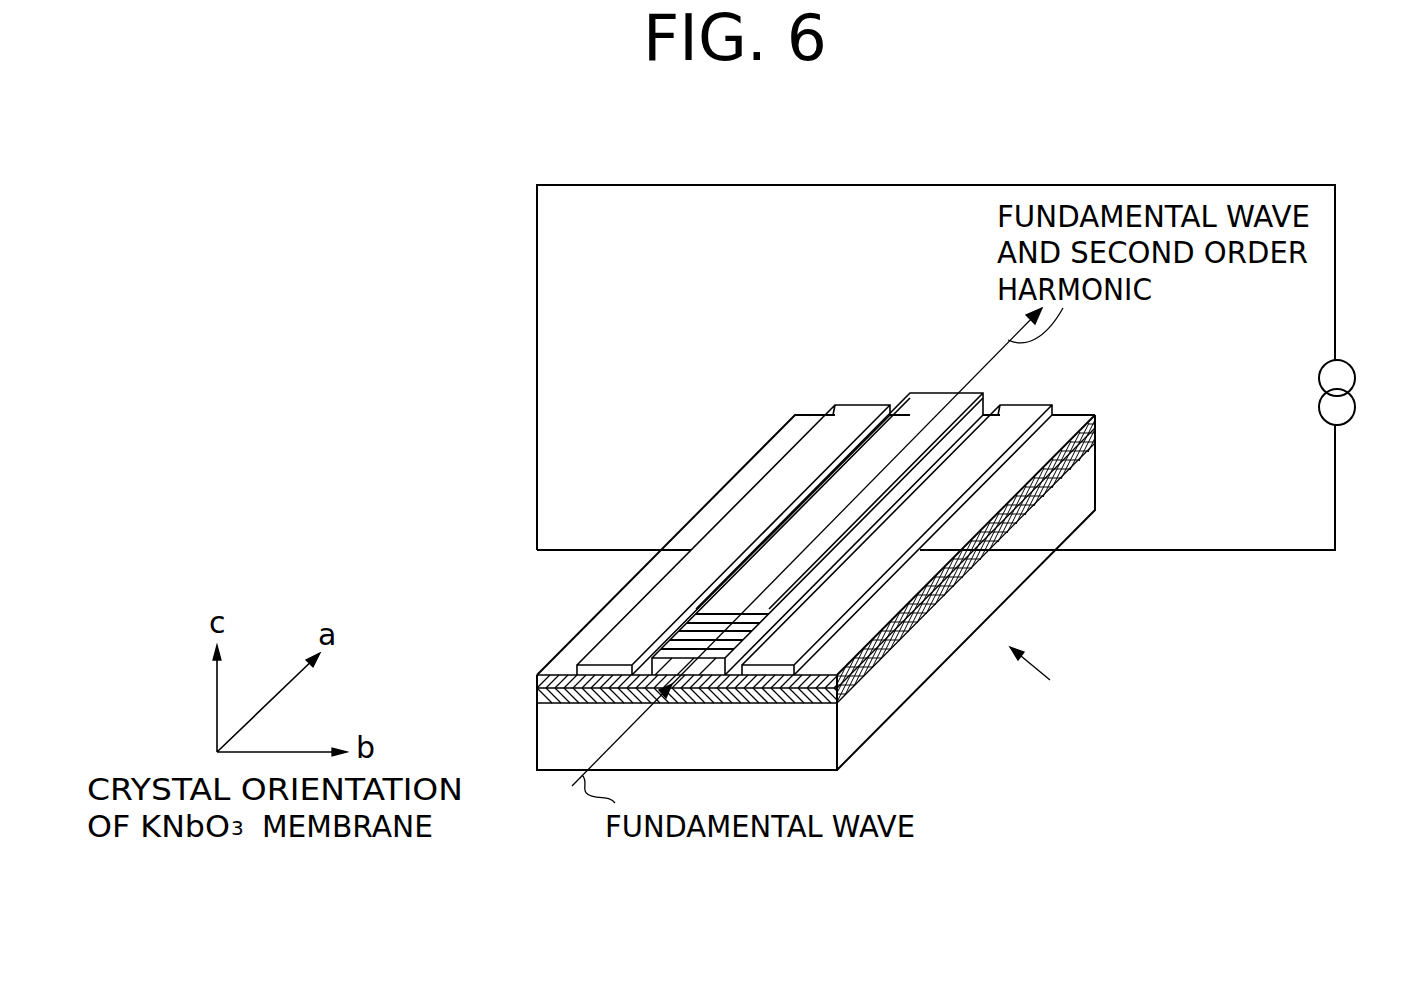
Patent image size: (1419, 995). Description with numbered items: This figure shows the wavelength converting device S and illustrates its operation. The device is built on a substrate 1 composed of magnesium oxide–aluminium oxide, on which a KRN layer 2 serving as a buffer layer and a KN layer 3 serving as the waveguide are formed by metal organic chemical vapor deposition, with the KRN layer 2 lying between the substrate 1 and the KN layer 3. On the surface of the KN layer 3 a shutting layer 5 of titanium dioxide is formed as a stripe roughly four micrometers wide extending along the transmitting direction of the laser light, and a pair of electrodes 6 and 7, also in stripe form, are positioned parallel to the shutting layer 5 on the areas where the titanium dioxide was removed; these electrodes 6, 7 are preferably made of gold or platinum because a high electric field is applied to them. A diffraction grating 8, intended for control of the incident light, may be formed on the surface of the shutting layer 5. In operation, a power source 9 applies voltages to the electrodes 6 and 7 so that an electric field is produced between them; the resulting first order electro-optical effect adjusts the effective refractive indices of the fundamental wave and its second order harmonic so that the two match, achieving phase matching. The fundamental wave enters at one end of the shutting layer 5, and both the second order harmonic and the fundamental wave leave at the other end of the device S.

The substrate 1 is at (535, 753).
The KRN layer 2 is at (537, 701).
The KN layer 3 is at (535, 678).
The shutting layer 5 is at (988, 393).
The electrode 6 is at (1047, 402).
The electrode 7 is at (860, 403).
The diffraction grating 8 is at (667, 637).
The power source 9 is at (1357, 398).
The wavelength converting device S is at (1045, 682).